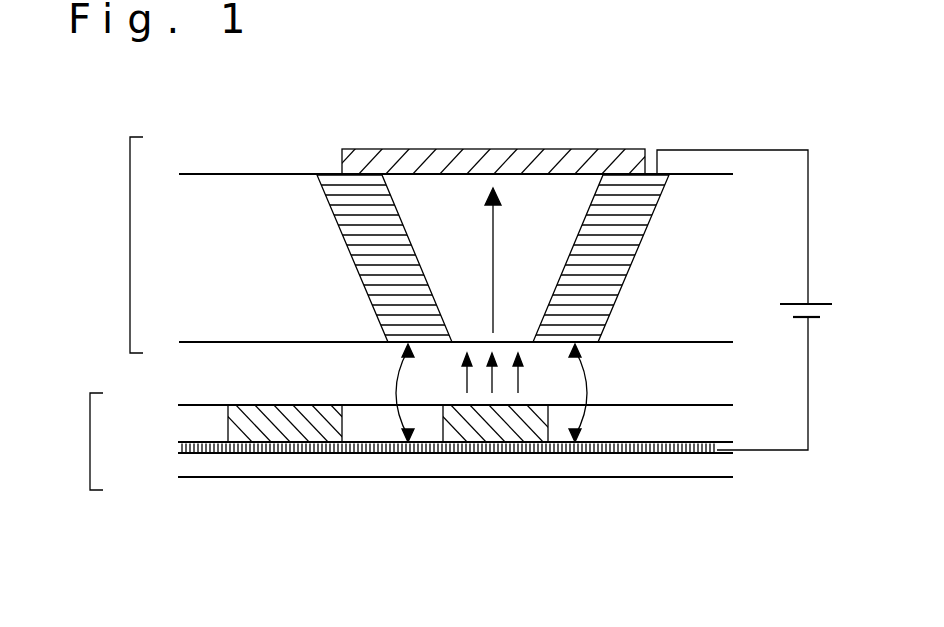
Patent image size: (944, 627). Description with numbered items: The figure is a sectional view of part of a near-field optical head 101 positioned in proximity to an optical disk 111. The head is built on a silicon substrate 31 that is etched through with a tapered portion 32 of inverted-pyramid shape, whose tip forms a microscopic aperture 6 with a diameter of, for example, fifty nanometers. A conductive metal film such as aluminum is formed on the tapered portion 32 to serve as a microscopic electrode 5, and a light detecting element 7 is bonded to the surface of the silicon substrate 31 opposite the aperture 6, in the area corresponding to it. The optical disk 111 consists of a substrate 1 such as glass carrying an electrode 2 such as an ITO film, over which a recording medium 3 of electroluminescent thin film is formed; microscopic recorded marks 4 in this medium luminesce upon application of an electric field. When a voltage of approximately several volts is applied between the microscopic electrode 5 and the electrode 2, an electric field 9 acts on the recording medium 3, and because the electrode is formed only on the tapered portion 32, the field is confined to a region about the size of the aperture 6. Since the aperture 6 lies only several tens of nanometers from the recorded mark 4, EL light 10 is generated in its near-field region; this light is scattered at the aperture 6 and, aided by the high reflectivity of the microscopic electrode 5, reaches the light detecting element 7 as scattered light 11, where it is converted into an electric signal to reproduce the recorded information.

The substrate 1 is at (217, 465).
The electrode 2 is at (182, 454).
The recording medium 3 is at (198, 418).
The recorded mark 4 is at (273, 423).
The microscopic electrode 5 is at (593, 272).
The microscopic aperture 6 is at (480, 329).
The light detecting element 7 is at (573, 152).
The electric field 9 is at (598, 392).
The EL light 10 is at (453, 392).
The scattered light 11 is at (482, 239).
The silicon substrate 31 is at (453, 258).
The tapered portion 32 is at (358, 272).
The near-field optical head 101 is at (101, 245).
The optical disk 111 is at (65, 441).